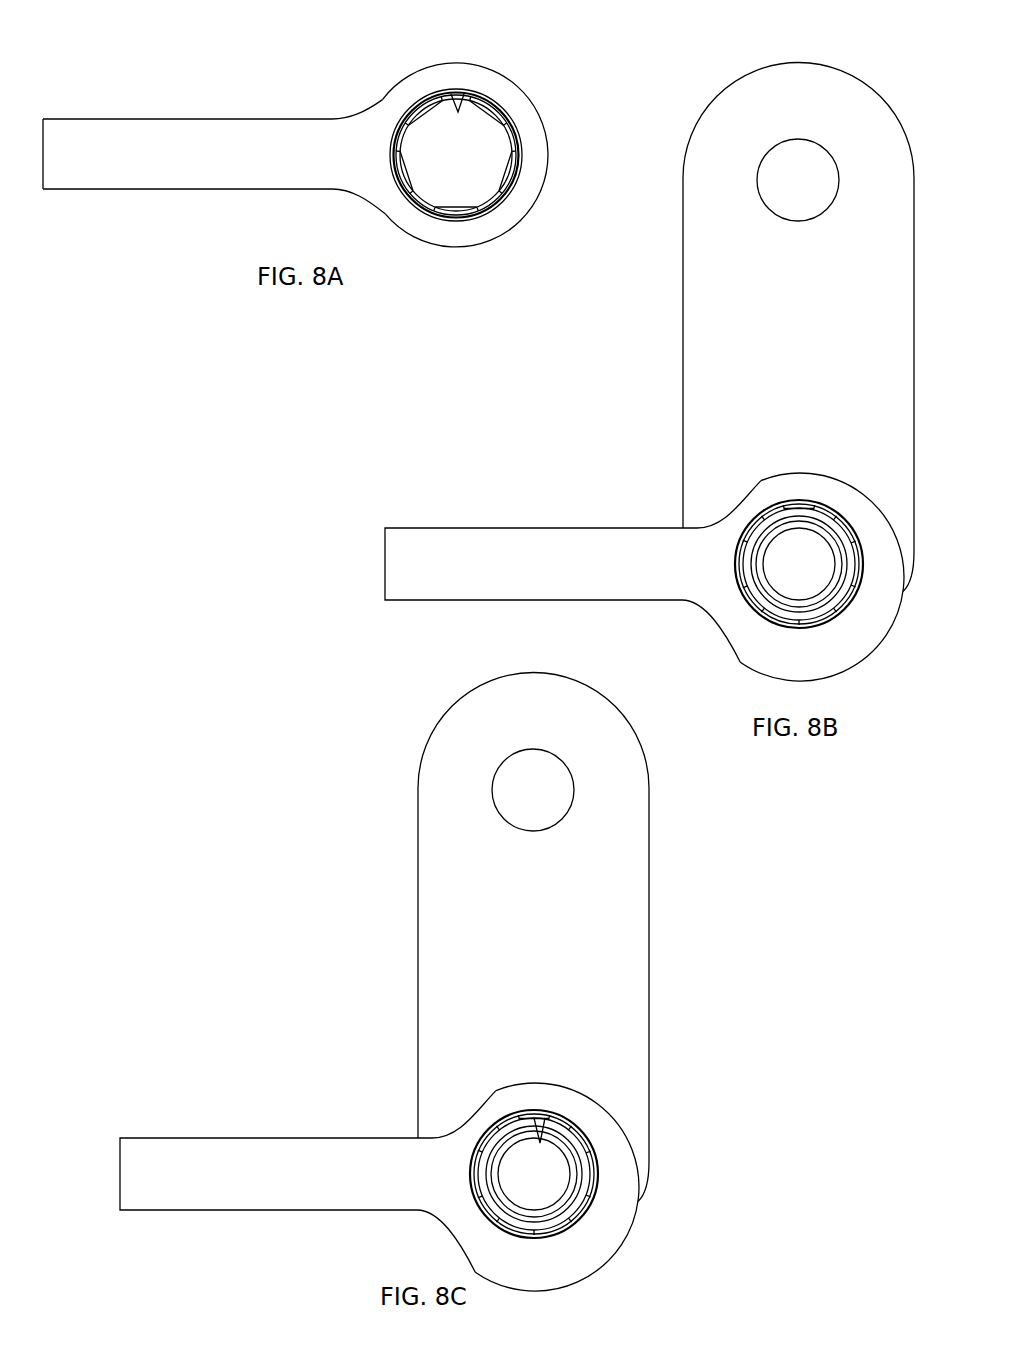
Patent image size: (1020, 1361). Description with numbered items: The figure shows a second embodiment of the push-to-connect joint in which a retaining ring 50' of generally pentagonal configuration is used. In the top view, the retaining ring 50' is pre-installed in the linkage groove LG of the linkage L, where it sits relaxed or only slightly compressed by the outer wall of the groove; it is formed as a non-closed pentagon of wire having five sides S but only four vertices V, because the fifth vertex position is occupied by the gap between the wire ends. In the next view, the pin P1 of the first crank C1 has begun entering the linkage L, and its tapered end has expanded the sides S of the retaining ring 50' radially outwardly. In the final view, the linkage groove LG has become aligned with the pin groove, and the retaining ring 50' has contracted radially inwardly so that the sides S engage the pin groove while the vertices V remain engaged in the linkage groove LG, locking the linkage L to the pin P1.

In FIG. 8A, the linkage L is at (200, 145).
In FIG. 8B, the linkage L is at (497, 540).
In FIG. 8C, the linkage L is at (258, 1148).
In FIG. 8A, the linkage groove LG is at (457, 96).
In FIG. 8C, the linkage groove LG is at (541, 1140).
In FIG. 8A, the retaining ring 50' is at (484, 139).
In FIG. 8A, the sides S is at (402, 172).
In FIG. 8B, the sides S is at (767, 510).
In FIG. 8C, the sides S is at (497, 1120).
In FIG. 8A, the vertices V is at (397, 136).
In FIG. 8B, the vertices V is at (863, 537).
In FIG. 8C, the vertices V is at (593, 1153).
In FIG. 8B, the first crank C1 is at (712, 288).
In FIG. 8C, the first crank C1 is at (637, 900).
In FIG. 8B, the pin P1 is at (805, 565).
In FIG. 8C, the pin P1 is at (530, 1167).